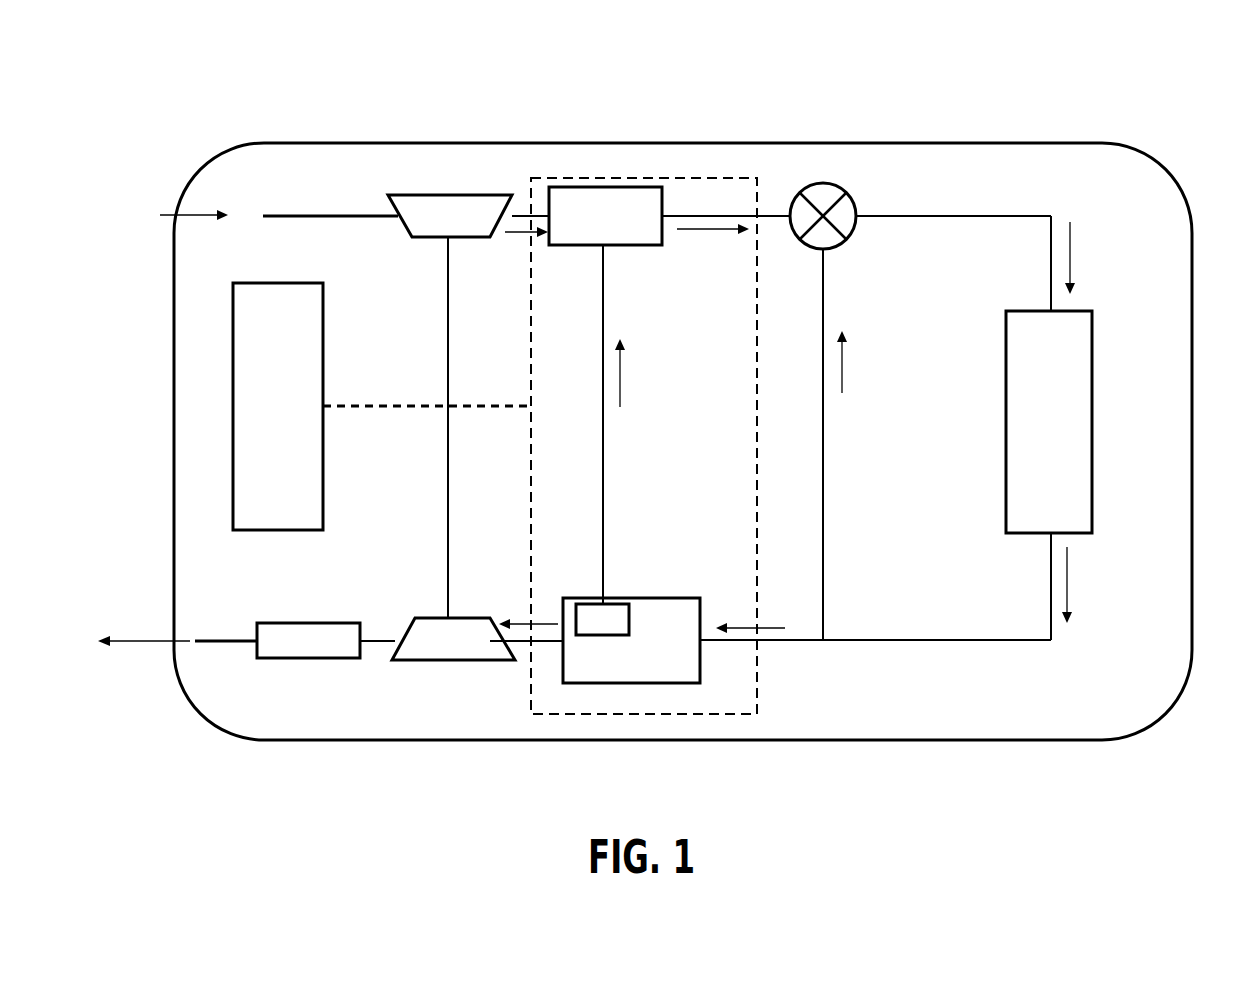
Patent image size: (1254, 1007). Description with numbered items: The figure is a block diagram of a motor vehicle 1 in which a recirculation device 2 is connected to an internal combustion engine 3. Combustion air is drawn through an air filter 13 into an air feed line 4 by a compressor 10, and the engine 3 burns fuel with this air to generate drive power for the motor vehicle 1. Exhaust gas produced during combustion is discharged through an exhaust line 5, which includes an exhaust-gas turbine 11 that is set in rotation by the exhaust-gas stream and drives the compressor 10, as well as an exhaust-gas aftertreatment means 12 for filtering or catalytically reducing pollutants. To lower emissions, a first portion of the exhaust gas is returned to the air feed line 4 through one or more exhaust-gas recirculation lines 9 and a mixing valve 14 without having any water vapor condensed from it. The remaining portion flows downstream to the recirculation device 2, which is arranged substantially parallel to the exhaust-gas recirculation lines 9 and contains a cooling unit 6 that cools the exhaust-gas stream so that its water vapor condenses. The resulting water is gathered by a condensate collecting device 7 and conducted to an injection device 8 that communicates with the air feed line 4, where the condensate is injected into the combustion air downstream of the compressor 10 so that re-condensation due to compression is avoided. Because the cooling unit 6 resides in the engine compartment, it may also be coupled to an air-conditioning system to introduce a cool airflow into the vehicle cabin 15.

The motor vehicle 1 is at (1178, 122).
The recirculation device 2 is at (757, 710).
The internal combustion engine 3 is at (1082, 460).
The air feed line 4 is at (698, 213).
The exhaust line 5 is at (737, 641).
The cooling unit 6 is at (582, 683).
The condensate collecting device 7 is at (613, 618).
The injection device 8 is at (598, 207).
The exhaust-gas recirculation line 9 is at (825, 487).
The compressor 10 is at (438, 212).
The exhaust-gas turbine 11 is at (437, 651).
The exhaust-gas aftertreatment means 12 is at (278, 649).
The air filter 13 is at (278, 212).
The mixing valve 14 is at (830, 190).
The vehicle cabin 15 is at (233, 318).